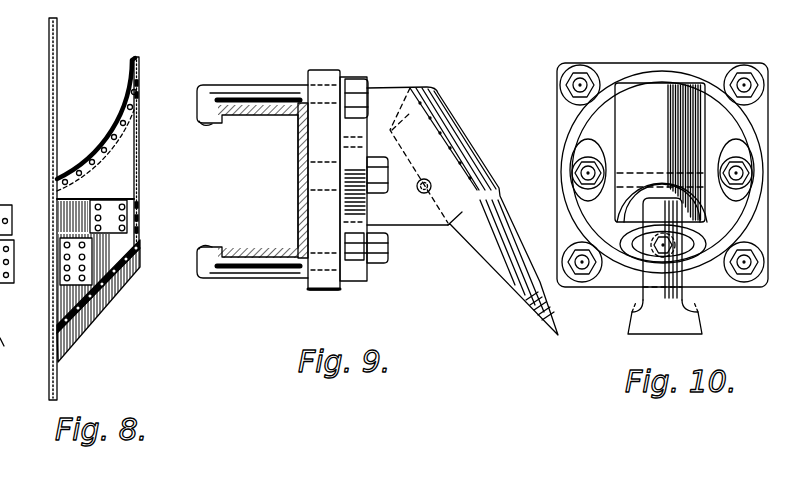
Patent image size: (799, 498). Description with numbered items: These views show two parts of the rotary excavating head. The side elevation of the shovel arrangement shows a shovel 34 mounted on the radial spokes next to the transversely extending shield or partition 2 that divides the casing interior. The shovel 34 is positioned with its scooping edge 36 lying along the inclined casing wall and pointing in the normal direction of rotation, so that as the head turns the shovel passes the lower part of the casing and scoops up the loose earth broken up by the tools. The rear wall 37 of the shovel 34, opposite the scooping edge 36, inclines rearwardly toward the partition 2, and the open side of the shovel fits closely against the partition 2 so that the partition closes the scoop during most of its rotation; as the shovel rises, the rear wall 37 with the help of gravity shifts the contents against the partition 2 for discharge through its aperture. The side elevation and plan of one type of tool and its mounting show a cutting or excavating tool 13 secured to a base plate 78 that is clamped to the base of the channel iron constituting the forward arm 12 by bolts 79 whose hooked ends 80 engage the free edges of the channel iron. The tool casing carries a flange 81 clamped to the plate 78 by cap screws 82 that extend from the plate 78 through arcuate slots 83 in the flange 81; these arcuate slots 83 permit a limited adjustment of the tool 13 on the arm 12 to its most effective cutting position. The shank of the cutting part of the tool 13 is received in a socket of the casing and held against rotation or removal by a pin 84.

In FIG. 8, the shield or partition 2 is at (49, 69).
In FIG. 8, the scooping edge 36 is at (109, 137).
In FIG. 8, the shovel 34 is at (116, 164).
In FIG. 8, the rear wall 37 is at (109, 306).
In FIG. 9, the bolt 79 is at (268, 88).
In FIG. 9, the hooked end 80 is at (209, 122).
In FIG. 9, the arcuate slot 83 is at (348, 139).
In FIG. 10, the arcuate slot 83 is at (588, 150).
In FIG. 9, the base plate 78 is at (336, 293).
In FIG. 9, the forward arm 12 is at (274, 250).
In FIG. 9, the flange 81 is at (360, 112).
In FIG. 10, the flange 81 is at (590, 124).
In FIG. 9, the cap screw 82 is at (383, 184).
In FIG. 10, the cap screw 82 is at (578, 185).
In FIG. 9, the pin 84 is at (430, 179).
In FIG. 10, the pin 84 is at (633, 172).
In FIG. 9, the cutting or excavating tool 13 is at (500, 290).
In FIG. 10, the cutting or excavating tool 13 is at (642, 298).